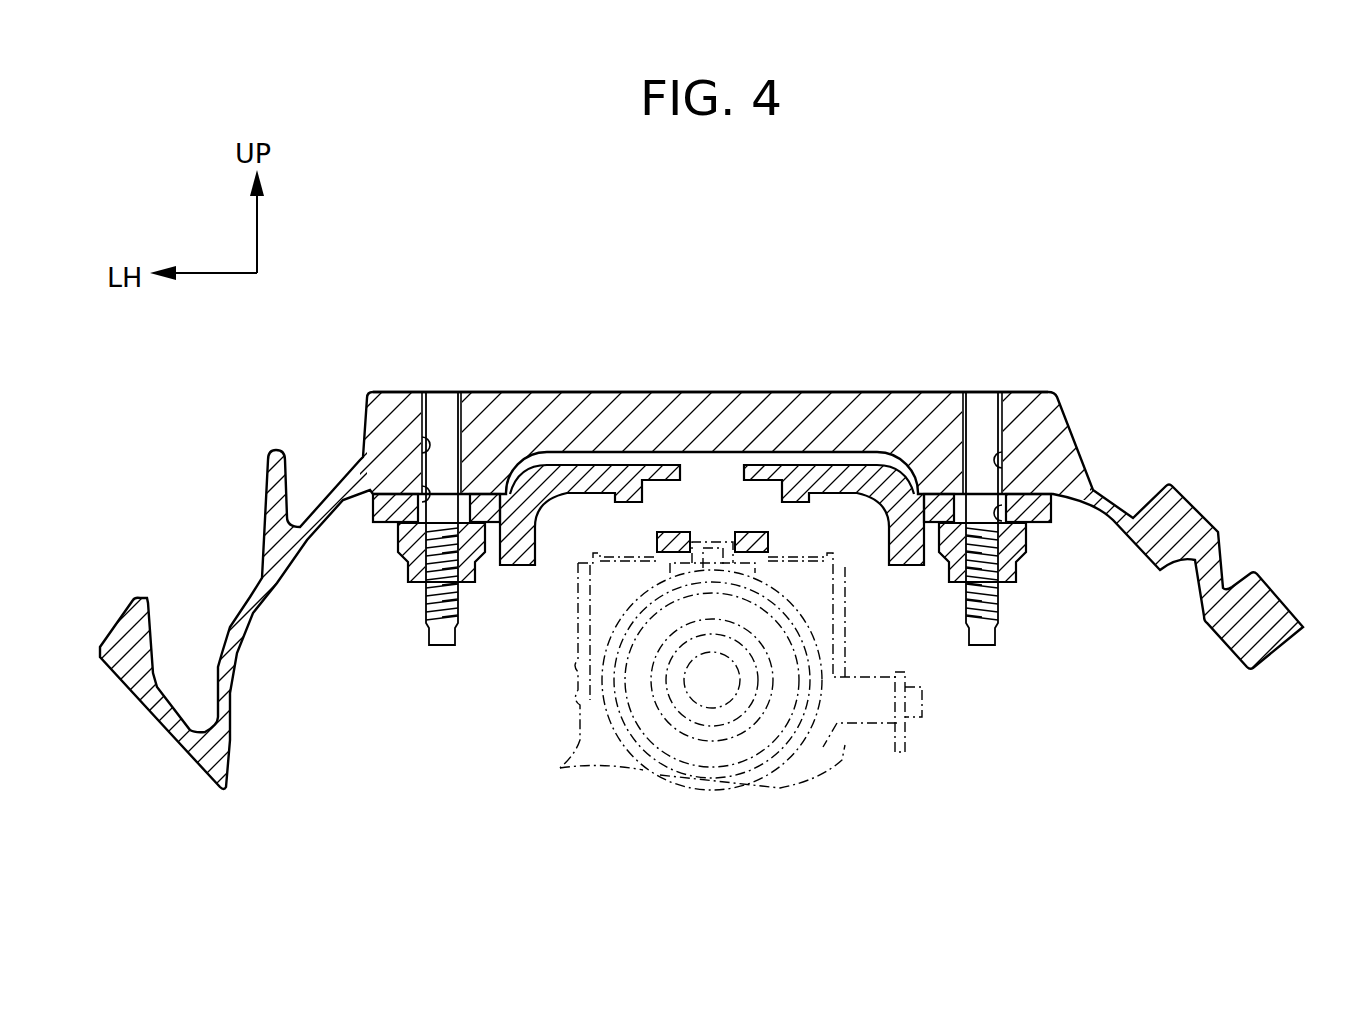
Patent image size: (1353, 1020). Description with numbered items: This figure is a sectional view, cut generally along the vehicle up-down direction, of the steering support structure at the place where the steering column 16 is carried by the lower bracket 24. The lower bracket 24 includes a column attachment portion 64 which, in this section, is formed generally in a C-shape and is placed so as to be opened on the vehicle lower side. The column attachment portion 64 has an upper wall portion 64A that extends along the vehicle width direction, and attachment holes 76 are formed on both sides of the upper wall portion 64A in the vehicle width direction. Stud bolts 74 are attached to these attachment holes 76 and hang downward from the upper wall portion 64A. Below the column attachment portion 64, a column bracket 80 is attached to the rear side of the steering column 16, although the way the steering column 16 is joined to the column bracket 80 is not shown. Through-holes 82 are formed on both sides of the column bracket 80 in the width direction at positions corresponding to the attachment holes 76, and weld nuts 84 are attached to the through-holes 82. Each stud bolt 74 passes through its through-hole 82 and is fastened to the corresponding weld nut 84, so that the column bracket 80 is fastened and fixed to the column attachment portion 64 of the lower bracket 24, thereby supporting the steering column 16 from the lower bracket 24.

The steering column 16 is at (600, 625).
The lower bracket 24 is at (701, 542).
The column attachment portion 64 is at (701, 542).
The upper wall portion 64A is at (660, 390).
The stud bolt 74 is at (430, 410).
The attachment hole 76 is at (423, 457).
The column bracket 80 is at (905, 553).
The through-hole 82 is at (410, 488).
The weld nut 84 is at (395, 537).